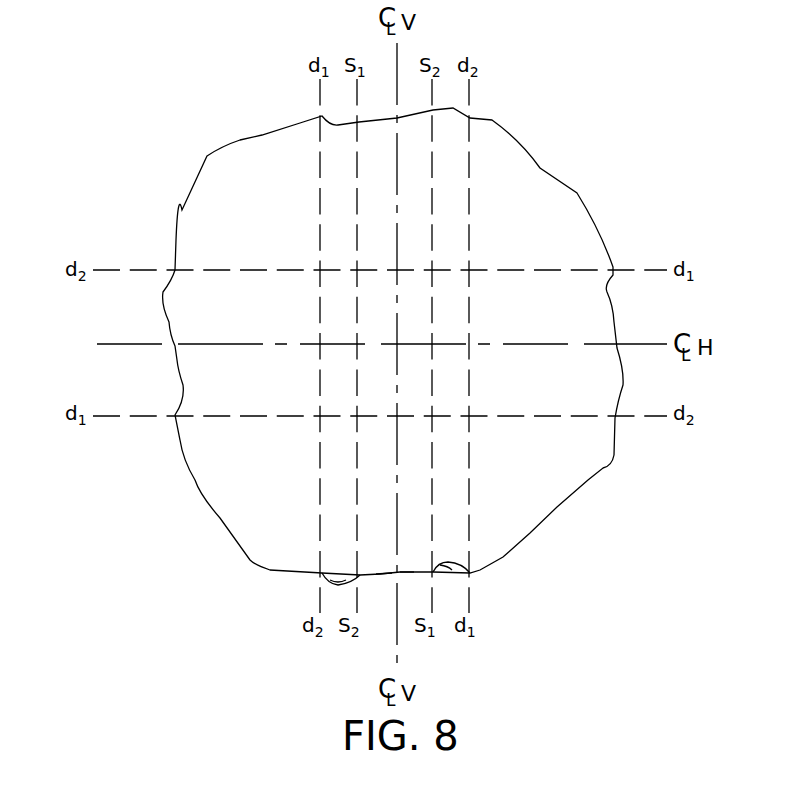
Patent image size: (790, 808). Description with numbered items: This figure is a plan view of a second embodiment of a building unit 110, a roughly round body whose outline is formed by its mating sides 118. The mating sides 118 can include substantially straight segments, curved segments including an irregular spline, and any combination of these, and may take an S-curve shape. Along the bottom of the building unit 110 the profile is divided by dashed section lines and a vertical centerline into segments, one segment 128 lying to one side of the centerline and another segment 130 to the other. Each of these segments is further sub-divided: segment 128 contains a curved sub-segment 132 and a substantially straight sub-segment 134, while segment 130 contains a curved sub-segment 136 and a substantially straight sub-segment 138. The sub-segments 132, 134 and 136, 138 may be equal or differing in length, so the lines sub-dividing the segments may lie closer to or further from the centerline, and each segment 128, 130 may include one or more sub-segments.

The building unit 110 is at (149, 123).
The mating sides 118 is at (455, 108).
The segment 128 is at (420, 567).
The segment 130 is at (368, 576).
The curved sub-segment 132 is at (447, 567).
The substantially straight sub-segment 134 is at (406, 576).
The curved sub-segment 136 is at (337, 585).
The substantially straight sub-segment 138 is at (386, 576).